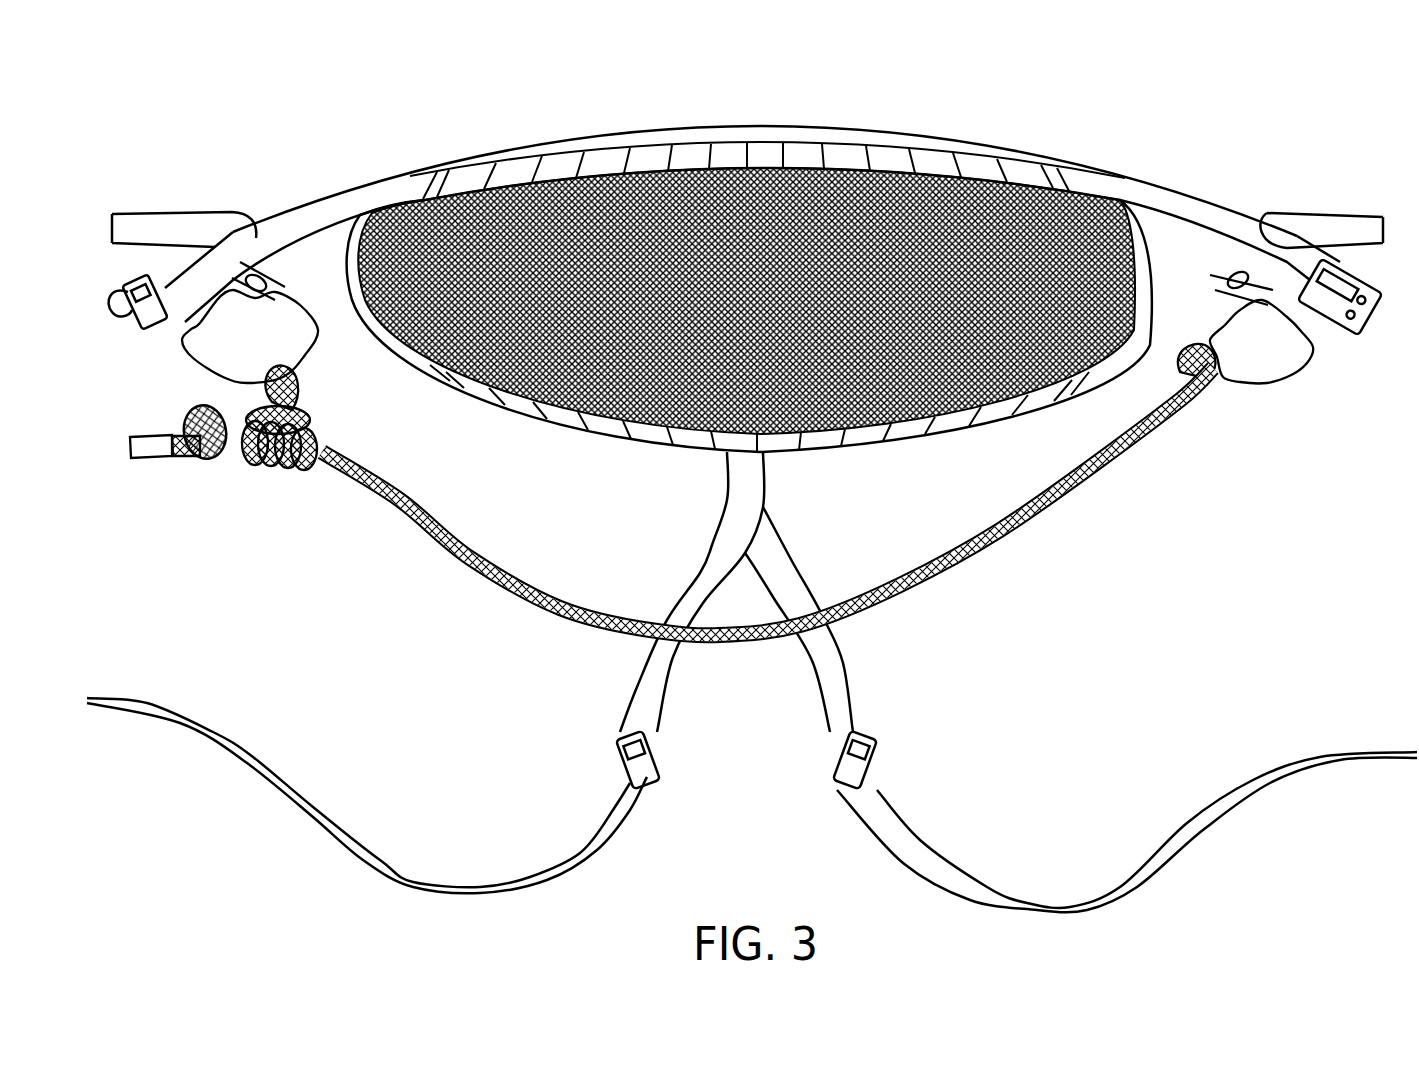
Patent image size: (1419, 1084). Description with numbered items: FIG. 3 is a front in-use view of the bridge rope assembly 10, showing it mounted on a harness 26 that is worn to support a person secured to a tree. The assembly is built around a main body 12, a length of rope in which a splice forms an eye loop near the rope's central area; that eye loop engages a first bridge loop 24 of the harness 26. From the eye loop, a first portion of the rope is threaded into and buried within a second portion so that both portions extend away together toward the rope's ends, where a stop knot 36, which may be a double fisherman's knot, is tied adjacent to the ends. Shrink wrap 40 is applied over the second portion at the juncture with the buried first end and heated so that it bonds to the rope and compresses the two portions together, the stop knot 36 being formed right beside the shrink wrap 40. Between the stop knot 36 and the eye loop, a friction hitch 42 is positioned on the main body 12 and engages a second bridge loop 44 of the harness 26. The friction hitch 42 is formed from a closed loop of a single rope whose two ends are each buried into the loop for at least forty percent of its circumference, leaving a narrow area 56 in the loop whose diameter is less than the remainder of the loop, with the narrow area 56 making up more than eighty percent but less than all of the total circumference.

The bridge rope assembly 10 is at (385, 600).
The main body 12 is at (978, 568).
The first bridge loop 24 is at (1293, 372).
The harness 26 is at (763, 118).
The stop knot 36 is at (206, 480).
The shrink wrap 40 is at (130, 447).
The friction hitch 42 is at (295, 482).
The second bridge loop 44 is at (212, 345).
The narrow area 56 is at (247, 335).